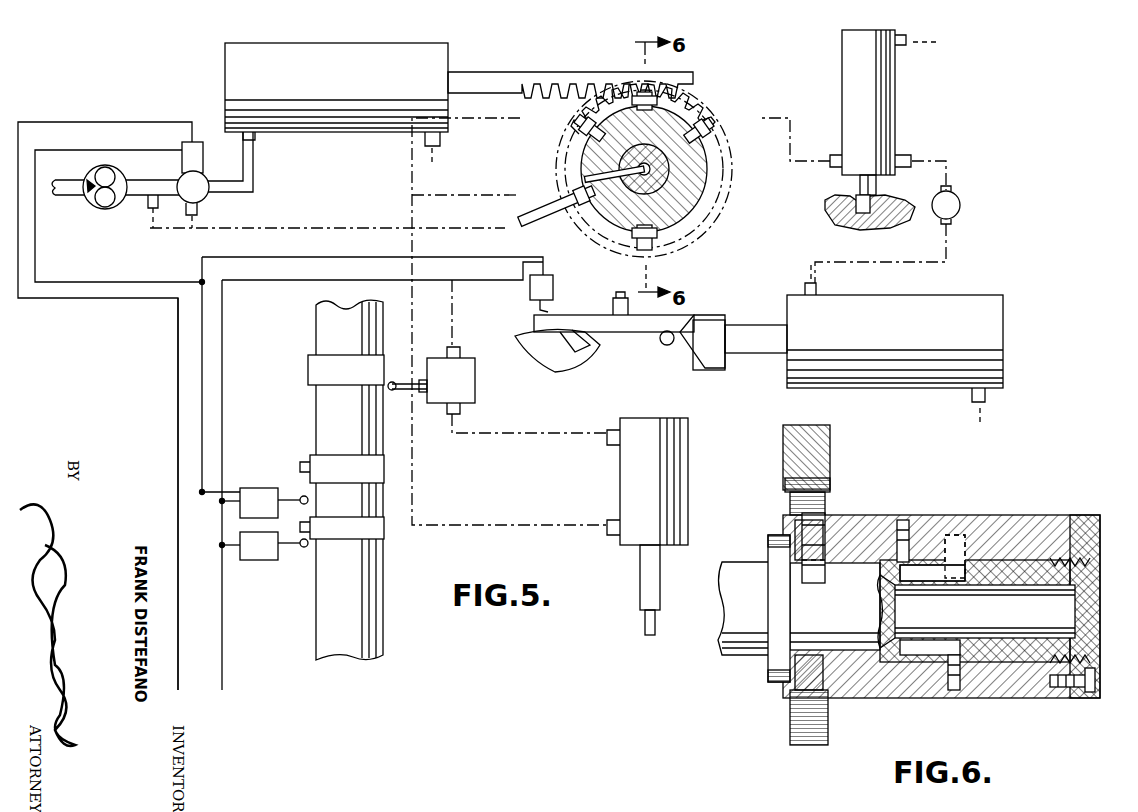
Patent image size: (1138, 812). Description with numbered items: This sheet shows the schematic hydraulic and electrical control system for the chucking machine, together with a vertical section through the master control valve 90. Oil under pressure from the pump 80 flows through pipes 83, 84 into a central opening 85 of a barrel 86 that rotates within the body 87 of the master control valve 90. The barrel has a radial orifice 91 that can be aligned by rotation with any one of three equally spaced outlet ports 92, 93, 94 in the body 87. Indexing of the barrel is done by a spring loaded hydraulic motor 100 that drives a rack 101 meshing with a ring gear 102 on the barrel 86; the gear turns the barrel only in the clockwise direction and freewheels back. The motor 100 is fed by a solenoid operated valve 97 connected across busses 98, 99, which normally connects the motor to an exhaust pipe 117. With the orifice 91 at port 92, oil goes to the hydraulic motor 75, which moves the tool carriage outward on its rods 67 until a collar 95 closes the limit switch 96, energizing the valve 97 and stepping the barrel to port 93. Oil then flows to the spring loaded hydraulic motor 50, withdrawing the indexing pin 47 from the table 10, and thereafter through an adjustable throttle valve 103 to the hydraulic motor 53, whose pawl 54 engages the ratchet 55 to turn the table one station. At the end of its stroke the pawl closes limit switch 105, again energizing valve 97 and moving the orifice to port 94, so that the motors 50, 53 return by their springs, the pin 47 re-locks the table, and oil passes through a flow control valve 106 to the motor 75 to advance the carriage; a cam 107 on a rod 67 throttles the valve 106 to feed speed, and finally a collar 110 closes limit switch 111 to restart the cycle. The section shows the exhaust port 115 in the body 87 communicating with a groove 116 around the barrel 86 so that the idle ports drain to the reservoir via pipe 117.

In FIG. 5, the table 10 is at (838, 215).
In FIG. 5, the indexing pin 47 is at (878, 186).
In FIG. 5, the spring loaded hydraulic motor 50 is at (886, 100).
In FIG. 5, the hydraulic motor 53 is at (966, 302).
In FIG. 5, the pawl 54 is at (682, 320).
In FIG. 5, the ratchet 55 is at (545, 358).
In FIG. 5, the rods 67 is at (322, 315).
In FIG. 5, the hydraulic motor 75 is at (678, 484).
In FIG. 5, the pump 80 is at (122, 198).
In FIG. 5, the pipe 83 is at (138, 182).
In FIG. 5, the pipe 84 is at (290, 228).
In FIG. 5, the central opening 85 is at (700, 195).
In FIG. 6, the central opening 85 is at (977, 610).
In FIG. 5, the barrel 86 is at (668, 165).
In FIG. 6, the barrel 86 is at (799, 597).
In FIG. 5, the body 87 is at (600, 210).
In FIG. 6, the body 87 is at (1036, 690).
In FIG. 5, the master control valve 90 is at (646, 170).
In FIG. 6, the master control valve 90 is at (962, 503).
In FIG. 5, the radial orifice 91 is at (640, 170).
In FIG. 5, the outlet port 92 is at (600, 148).
In FIG. 5, the outlet port 93 is at (697, 150).
In FIG. 6, the outlet port 93 is at (968, 540).
In FIG. 5, the outlet port 94 is at (662, 228).
In FIG. 6, the outlet port 94 is at (960, 690).
In FIG. 5, the collar 95 is at (385, 534).
In FIG. 5, the limit switch 96 is at (268, 560).
In FIG. 5, the solenoid operated valve 97 is at (204, 176).
In FIG. 5, the buss 98 is at (178, 592).
In FIG. 5, the buss 99 is at (222, 592).
In FIG. 5, the spring loaded hydraulic motor 100 is at (355, 118).
In FIG. 5, the rack 101 is at (532, 72).
In FIG. 6, the rack 101 is at (832, 456).
In FIG. 5, the ring gear 102 is at (688, 110).
In FIG. 6, the ring gear 102 is at (818, 727).
In FIG. 5, the adjustable throttle valve 103 is at (952, 210).
In FIG. 5, the limit switch 105 is at (548, 290).
In FIG. 5, the flow control valve 106 is at (458, 368).
In FIG. 5, the cam 107 is at (308, 365).
In FIG. 5, the collar 110 is at (310, 460).
In FIG. 5, the limit switch 111 is at (264, 488).
In FIG. 6, the exhaust port 115 is at (905, 518).
In FIG. 5, the groove 116 is at (655, 172).
In FIG. 6, the groove 116 is at (923, 565).
In FIG. 5, the exhaust pipe 117 is at (199, 210).